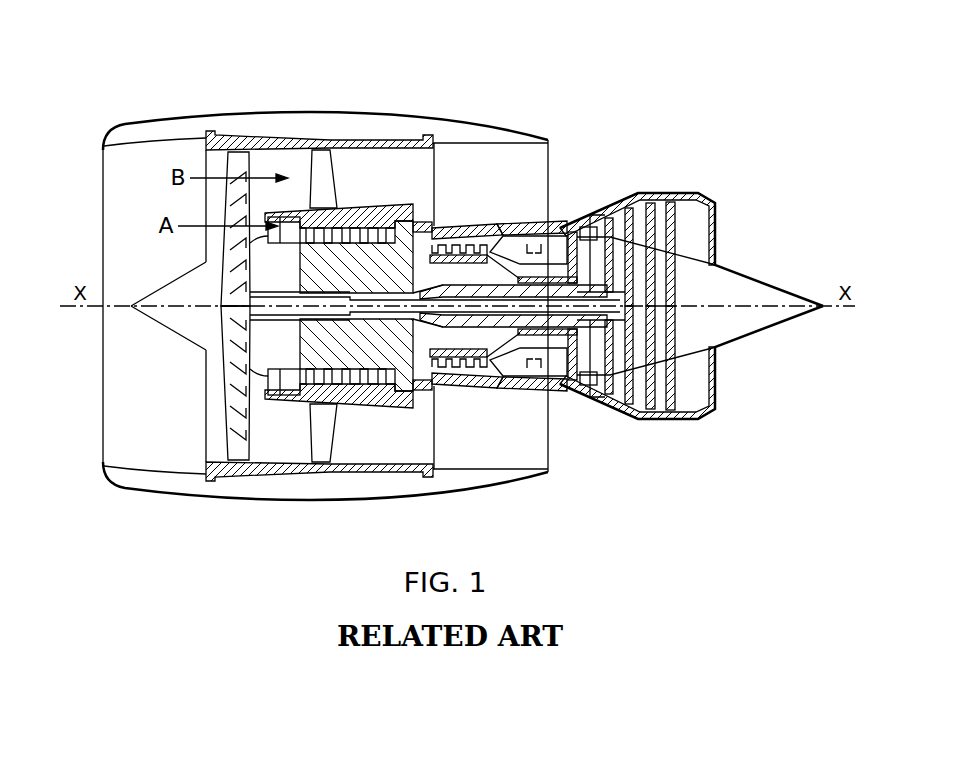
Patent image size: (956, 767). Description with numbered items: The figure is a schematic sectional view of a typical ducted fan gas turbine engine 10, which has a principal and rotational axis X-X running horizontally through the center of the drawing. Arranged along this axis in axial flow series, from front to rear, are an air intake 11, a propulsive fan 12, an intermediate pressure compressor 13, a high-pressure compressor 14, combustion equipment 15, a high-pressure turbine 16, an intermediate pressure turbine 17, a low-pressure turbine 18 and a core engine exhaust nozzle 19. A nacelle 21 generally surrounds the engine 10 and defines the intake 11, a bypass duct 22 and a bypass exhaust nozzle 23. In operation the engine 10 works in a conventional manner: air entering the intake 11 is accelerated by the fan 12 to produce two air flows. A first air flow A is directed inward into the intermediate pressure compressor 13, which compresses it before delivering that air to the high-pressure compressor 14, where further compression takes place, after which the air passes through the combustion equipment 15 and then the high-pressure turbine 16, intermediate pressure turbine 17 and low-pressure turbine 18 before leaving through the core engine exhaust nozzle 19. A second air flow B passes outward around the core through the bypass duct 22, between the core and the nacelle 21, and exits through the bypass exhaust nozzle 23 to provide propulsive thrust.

The ducted fan gas turbine engine 10 is at (143, 76).
The air intake 11 is at (150, 145).
The propulsive fan 12 is at (228, 426).
The intermediate pressure compressor 13 is at (360, 382).
The high-pressure compressor 14 is at (470, 233).
The combustion equipment 15 is at (522, 372).
The high-pressure turbine 16 is at (553, 390).
The intermediate pressure turbine 17 is at (606, 217).
The low-pressure turbine 18 is at (618, 410).
The core engine exhaust nozzle 19 is at (708, 196).
The nacelle 21 is at (364, 124).
The bypass duct 22 is at (483, 179).
The bypass exhaust nozzle 23 is at (550, 138).